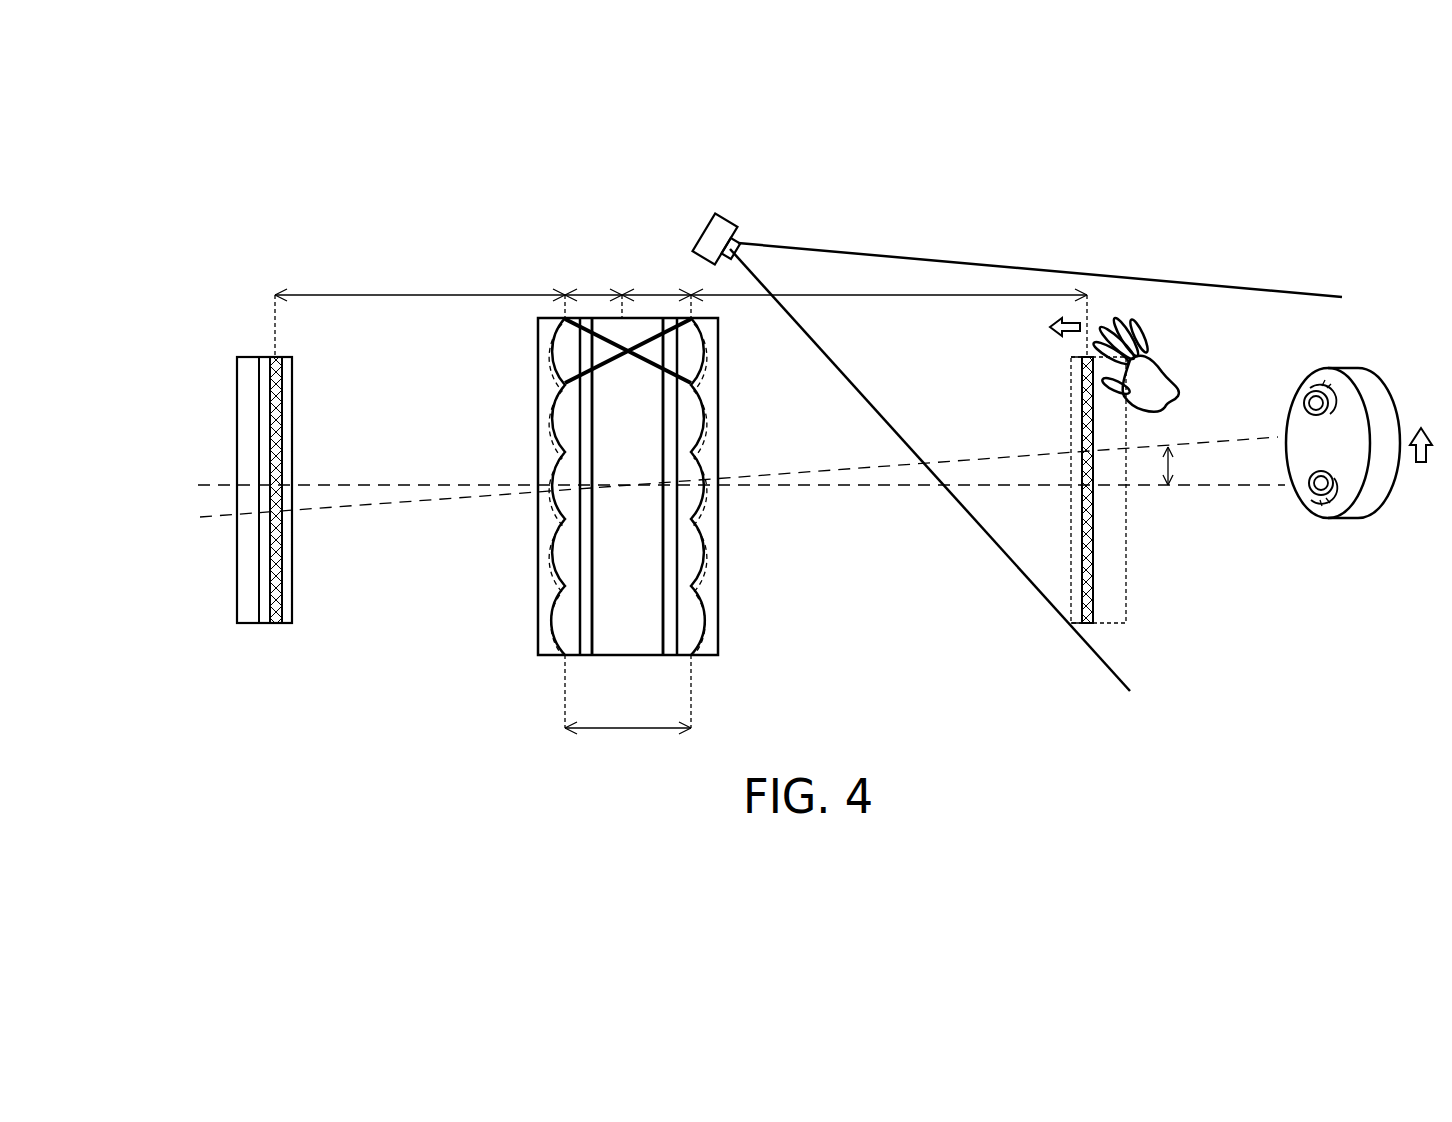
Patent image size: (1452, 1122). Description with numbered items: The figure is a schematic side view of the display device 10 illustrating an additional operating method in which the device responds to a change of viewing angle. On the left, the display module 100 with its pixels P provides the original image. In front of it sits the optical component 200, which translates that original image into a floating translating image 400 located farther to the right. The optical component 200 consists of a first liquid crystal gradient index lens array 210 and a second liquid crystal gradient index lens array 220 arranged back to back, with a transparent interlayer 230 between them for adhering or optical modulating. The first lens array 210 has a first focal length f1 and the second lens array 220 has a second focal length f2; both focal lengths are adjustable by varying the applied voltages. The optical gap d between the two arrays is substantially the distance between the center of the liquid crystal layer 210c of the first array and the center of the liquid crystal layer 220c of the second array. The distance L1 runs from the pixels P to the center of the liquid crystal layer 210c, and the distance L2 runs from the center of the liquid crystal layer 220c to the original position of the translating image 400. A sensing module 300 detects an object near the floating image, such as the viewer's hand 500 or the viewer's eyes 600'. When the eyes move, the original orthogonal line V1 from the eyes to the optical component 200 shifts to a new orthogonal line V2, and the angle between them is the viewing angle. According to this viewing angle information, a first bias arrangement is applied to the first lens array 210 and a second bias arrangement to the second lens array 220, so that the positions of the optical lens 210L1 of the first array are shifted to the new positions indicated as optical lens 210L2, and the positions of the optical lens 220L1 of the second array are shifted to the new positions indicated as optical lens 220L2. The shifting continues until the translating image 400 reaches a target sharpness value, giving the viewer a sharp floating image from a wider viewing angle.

The display device 10 is at (171, 200).
The display module 100 is at (233, 340).
The optical component 200 is at (630, 464).
The first liquid crystal gradient index lens array 210 is at (521, 512).
The optical lens of first LC GRIN lens array 210L1 is at (553, 590).
The shifted optical lens of first LC GRIN lens array 210L2 is at (546, 511).
The liquid crystal layer of first LC GRIN lens array 210c is at (559, 657).
The second liquid crystal gradient index lens array 220 is at (736, 512).
The optical lens of second LC GRIN lens array 220L1 is at (698, 590).
The shifted optical lens of second LC GRIN lens array 220L2 is at (708, 520).
The liquid crystal layer of second LC GRIN lens array 220c is at (700, 657).
The transparent interlayer 230 is at (628, 657).
The sensing module 300 is at (705, 236).
The translating image 400 is at (1126, 525).
The viewer's hand 500 is at (1163, 380).
The viewer's eyes 600' is at (1343, 419).
The pixels P is at (276, 630).
The original orthogonal line V1 is at (848, 490).
The shifted new orthogonal line V2 is at (848, 466).
The distance between first LC GRIN lens array and display module L1 is at (420, 312).
The distance between second LC GRIN lens array and original position of translating L2 is at (889, 312).
The first focal length f1 is at (587, 293).
The second focal length f2 is at (656, 293).
The optical gap d is at (628, 704).